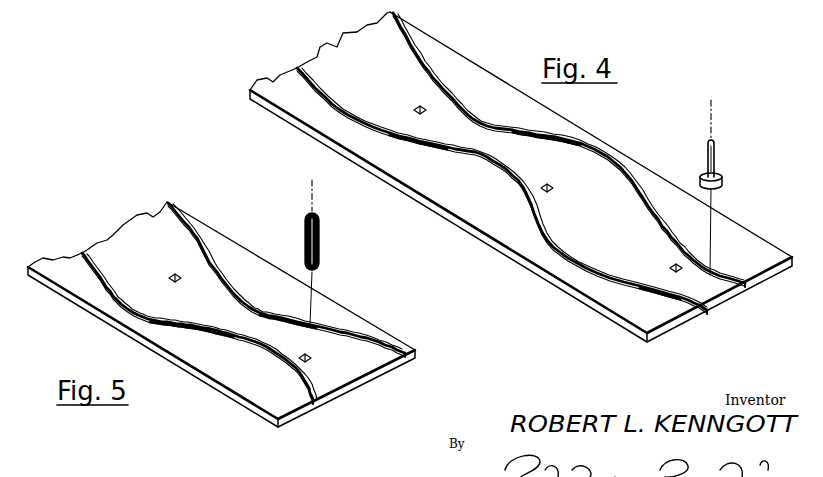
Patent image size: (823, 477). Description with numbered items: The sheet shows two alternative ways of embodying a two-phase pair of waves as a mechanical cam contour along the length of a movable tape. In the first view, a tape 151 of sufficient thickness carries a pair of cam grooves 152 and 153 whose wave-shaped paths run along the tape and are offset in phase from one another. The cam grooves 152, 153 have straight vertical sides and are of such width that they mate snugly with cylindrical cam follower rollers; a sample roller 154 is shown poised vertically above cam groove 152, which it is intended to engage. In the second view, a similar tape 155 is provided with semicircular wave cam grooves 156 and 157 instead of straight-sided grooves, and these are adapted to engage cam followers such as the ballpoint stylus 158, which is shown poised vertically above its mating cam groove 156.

In FIG. 4, the tape 151 is at (323, 43).
In FIG. 4, the cam groove 152 is at (456, 100).
In FIG. 4, the cam groove 153 is at (493, 181).
In FIG. 4, the cam follower roller 154 is at (722, 176).
In FIG. 5, the tape 155 is at (117, 230).
In FIG. 5, the cam groove 156 is at (238, 295).
In FIG. 5, the cam groove 157 is at (268, 357).
In FIG. 5, the ballpoint stylus 158 is at (321, 247).